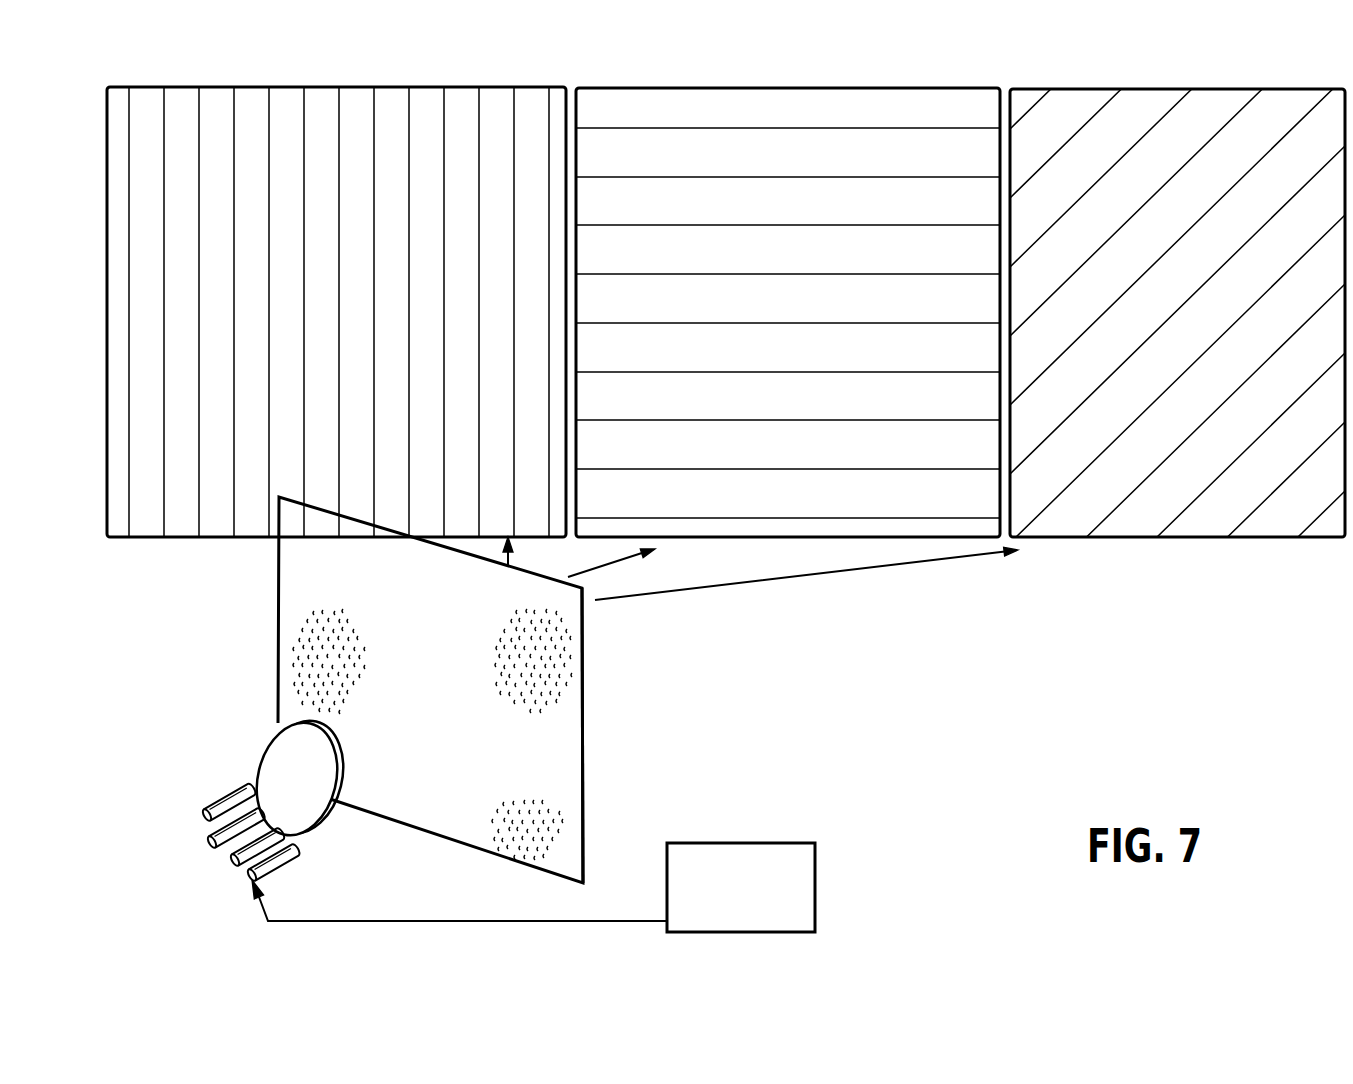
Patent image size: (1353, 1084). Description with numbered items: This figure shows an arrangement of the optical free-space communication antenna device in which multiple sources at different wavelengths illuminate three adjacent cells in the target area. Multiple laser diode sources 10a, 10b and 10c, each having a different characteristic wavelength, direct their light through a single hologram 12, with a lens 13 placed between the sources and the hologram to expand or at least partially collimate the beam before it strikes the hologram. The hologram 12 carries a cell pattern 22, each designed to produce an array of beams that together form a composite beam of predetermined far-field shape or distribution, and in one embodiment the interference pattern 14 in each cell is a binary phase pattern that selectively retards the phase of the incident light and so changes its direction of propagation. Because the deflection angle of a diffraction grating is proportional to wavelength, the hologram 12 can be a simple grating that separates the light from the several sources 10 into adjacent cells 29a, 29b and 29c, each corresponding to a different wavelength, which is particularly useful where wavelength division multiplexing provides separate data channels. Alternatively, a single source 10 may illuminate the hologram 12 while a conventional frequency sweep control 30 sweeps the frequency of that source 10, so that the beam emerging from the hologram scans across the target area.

The laser diode source 10 is at (275, 867).
The laser diode source 10a is at (215, 802).
The laser diode source 10b is at (213, 833).
The laser diode source 10c is at (233, 850).
The hologram 12 is at (449, 637).
The lens 13 is at (317, 833).
The interference pattern 14 is at (584, 768).
The cell pattern 22 is at (302, 685).
The cell 29a is at (184, 520).
The cell 29b is at (857, 508).
The cell 29c is at (1282, 518).
The frequency sweep control 30 is at (817, 888).